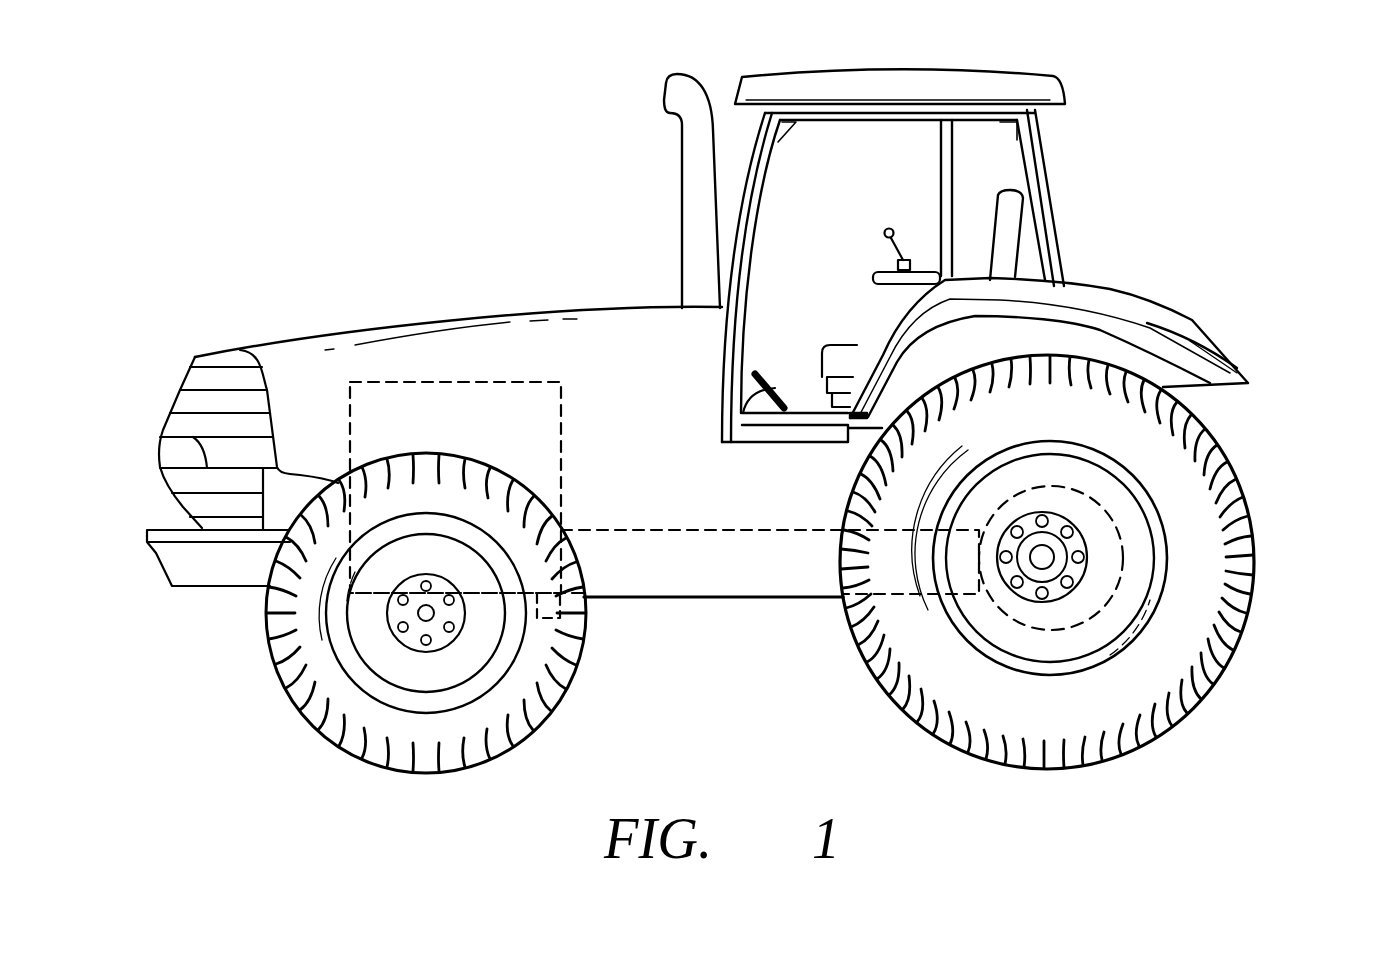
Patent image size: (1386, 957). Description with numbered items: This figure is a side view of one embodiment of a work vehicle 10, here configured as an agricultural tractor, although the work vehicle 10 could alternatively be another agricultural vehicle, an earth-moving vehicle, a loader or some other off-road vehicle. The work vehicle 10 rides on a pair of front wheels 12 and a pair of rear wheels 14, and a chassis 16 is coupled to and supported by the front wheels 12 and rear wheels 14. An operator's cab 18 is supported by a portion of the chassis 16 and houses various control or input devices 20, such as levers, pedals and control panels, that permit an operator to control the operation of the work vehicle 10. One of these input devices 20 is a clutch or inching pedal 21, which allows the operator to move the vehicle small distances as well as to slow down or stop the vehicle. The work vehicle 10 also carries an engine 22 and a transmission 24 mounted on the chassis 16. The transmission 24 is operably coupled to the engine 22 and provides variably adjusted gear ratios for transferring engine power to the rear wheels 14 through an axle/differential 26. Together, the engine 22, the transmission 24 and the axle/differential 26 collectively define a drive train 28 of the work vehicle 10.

The work vehicle 10 is at (346, 206).
The front wheels 12 is at (270, 632).
The rear wheels 14 is at (1256, 595).
The chassis 16 is at (657, 599).
The operator's cab 18 is at (1058, 203).
The control or input devices 20 is at (888, 229).
The clutch or inching pedal 21 is at (778, 395).
The engine 22 is at (427, 380).
The transmission 24 is at (719, 527).
The axle/differential 26 is at (1123, 565).
The drive train 28 is at (621, 330).